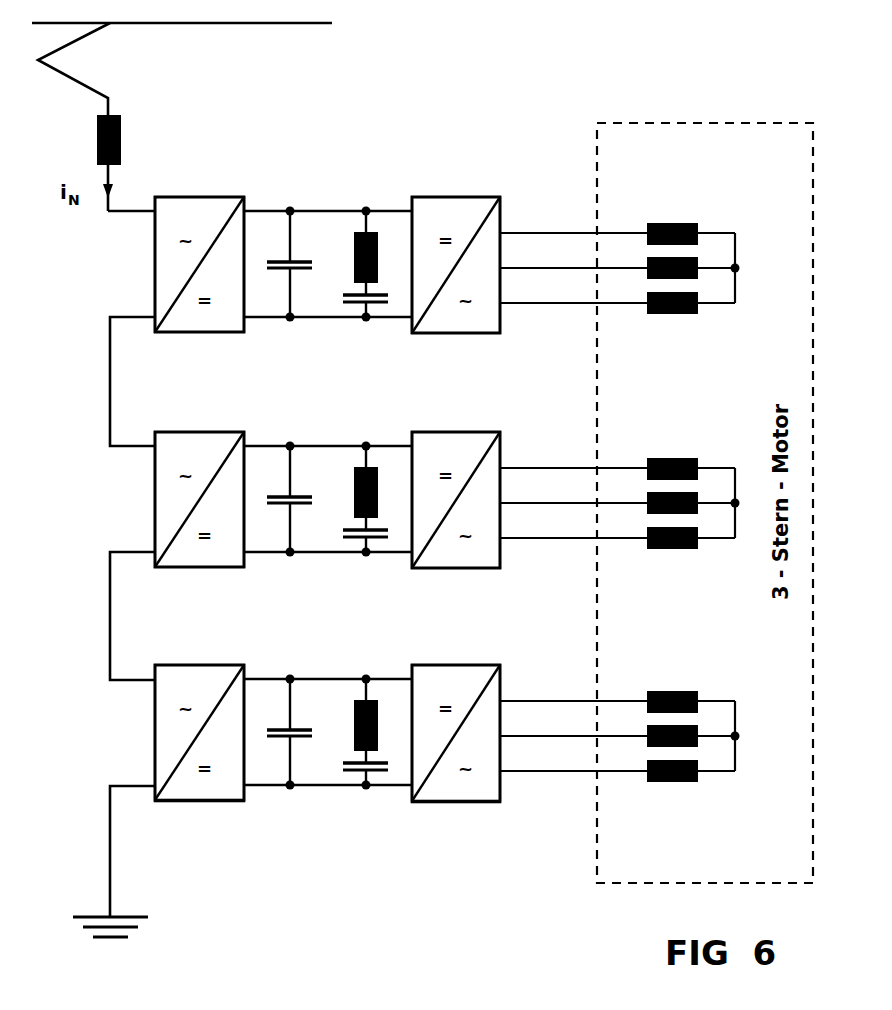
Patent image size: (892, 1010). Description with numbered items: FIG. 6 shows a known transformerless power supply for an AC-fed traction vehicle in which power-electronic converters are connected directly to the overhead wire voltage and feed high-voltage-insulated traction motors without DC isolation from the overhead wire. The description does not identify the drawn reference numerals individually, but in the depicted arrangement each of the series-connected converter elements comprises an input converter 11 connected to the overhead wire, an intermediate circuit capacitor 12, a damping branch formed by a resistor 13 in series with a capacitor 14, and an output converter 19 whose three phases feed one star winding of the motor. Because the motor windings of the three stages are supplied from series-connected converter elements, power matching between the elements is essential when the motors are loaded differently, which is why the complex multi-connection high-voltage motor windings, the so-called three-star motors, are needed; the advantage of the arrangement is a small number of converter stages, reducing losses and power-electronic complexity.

The AC/DC converter (rectifier) 11 is at (199, 197).
The intermediate circuit capacitor 12 is at (302, 259).
The damping resistor 13 is at (380, 234).
The damping capacitor 14 is at (390, 294).
The DC/AC inverter 19 is at (469, 197).